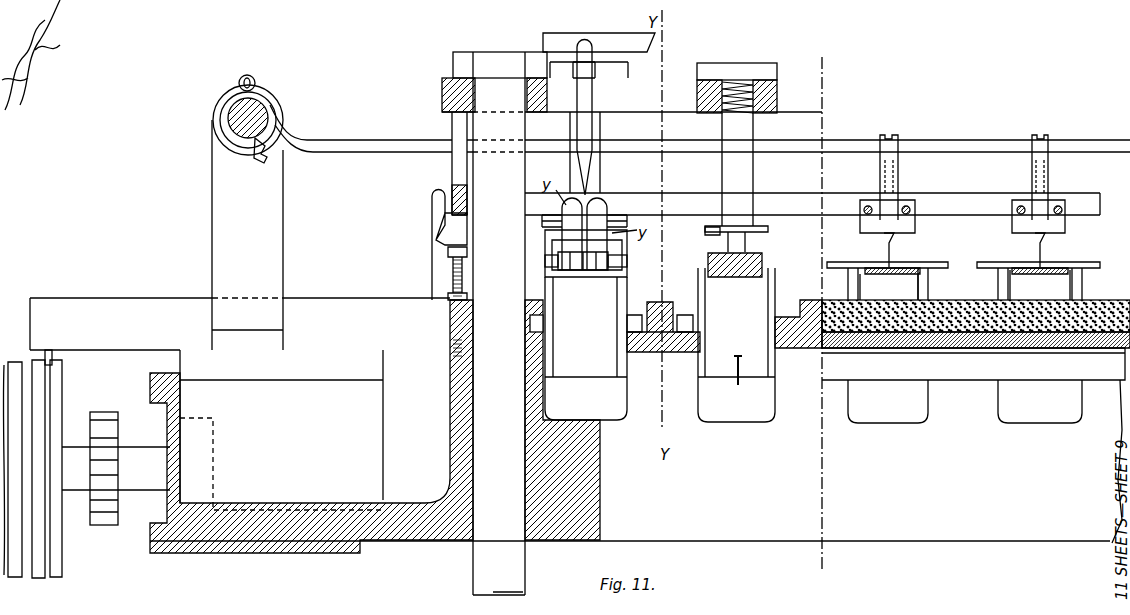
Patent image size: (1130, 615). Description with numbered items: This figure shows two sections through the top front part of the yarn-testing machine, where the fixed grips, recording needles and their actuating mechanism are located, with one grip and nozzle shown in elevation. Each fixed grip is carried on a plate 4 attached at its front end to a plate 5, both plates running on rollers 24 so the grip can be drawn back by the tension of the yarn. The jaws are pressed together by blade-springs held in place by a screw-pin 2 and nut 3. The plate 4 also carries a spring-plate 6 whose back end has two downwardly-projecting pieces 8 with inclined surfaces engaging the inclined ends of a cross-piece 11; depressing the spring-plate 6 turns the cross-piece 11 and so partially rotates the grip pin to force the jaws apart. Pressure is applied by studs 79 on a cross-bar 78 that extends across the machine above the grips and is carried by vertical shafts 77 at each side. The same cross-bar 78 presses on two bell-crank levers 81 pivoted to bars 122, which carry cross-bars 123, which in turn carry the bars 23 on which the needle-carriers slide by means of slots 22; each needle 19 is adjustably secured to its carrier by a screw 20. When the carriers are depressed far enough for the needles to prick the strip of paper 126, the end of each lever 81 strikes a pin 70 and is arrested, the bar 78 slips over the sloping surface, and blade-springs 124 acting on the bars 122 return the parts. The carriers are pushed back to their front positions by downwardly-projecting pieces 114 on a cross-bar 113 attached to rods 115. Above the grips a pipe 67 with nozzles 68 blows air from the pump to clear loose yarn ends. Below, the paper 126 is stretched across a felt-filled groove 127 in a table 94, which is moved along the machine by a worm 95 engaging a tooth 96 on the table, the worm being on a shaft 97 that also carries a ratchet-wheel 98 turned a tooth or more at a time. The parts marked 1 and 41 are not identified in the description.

The rods 115 is at (262, 118).
The cross-bar 113 is at (363, 149).
The tooth 96 is at (50, 356).
The worm 95 is at (60, 520).
The shaft 97 is at (116, 468).
The ratchet-wheel 98 is at (112, 440).
The vertical shafts 77 is at (499, 323).
The cross-bar 78 is at (442, 96).
The pipe 67 is at (584, 46).
The nozzles 68 is at (592, 105).
The studs 79 is at (594, 188).
The bell-crank levers 81 is at (459, 169).
The bars 122 is at (440, 206).
The blade-springs 124 is at (443, 232).
The pin 70 is at (450, 284).
The cross-bars 123 is at (812, 196).
The cross-piece 11 is at (586, 263).
The downwardly-projecting pieces 8 is at (545, 238).
The nut 3 is at (547, 263).
The screw-pin 2 is at (626, 262).
The rollers 24 is at (660, 345).
The plate 4 is at (889, 279).
The pin 1 is at (743, 370).
The spring-plate 6 is at (707, 233).
The groove 127 is at (976, 316).
The table 94 is at (976, 428).
The plate 5 is at (946, 263).
The box 41 is at (889, 287).
The strip of paper 126 is at (972, 287).
The screw 20 is at (899, 180).
The downwardly-projecting pieces 114 is at (880, 180).
The bars 23 is at (864, 210).
The slots 22 is at (1017, 210).
The needle 19 is at (891, 245).